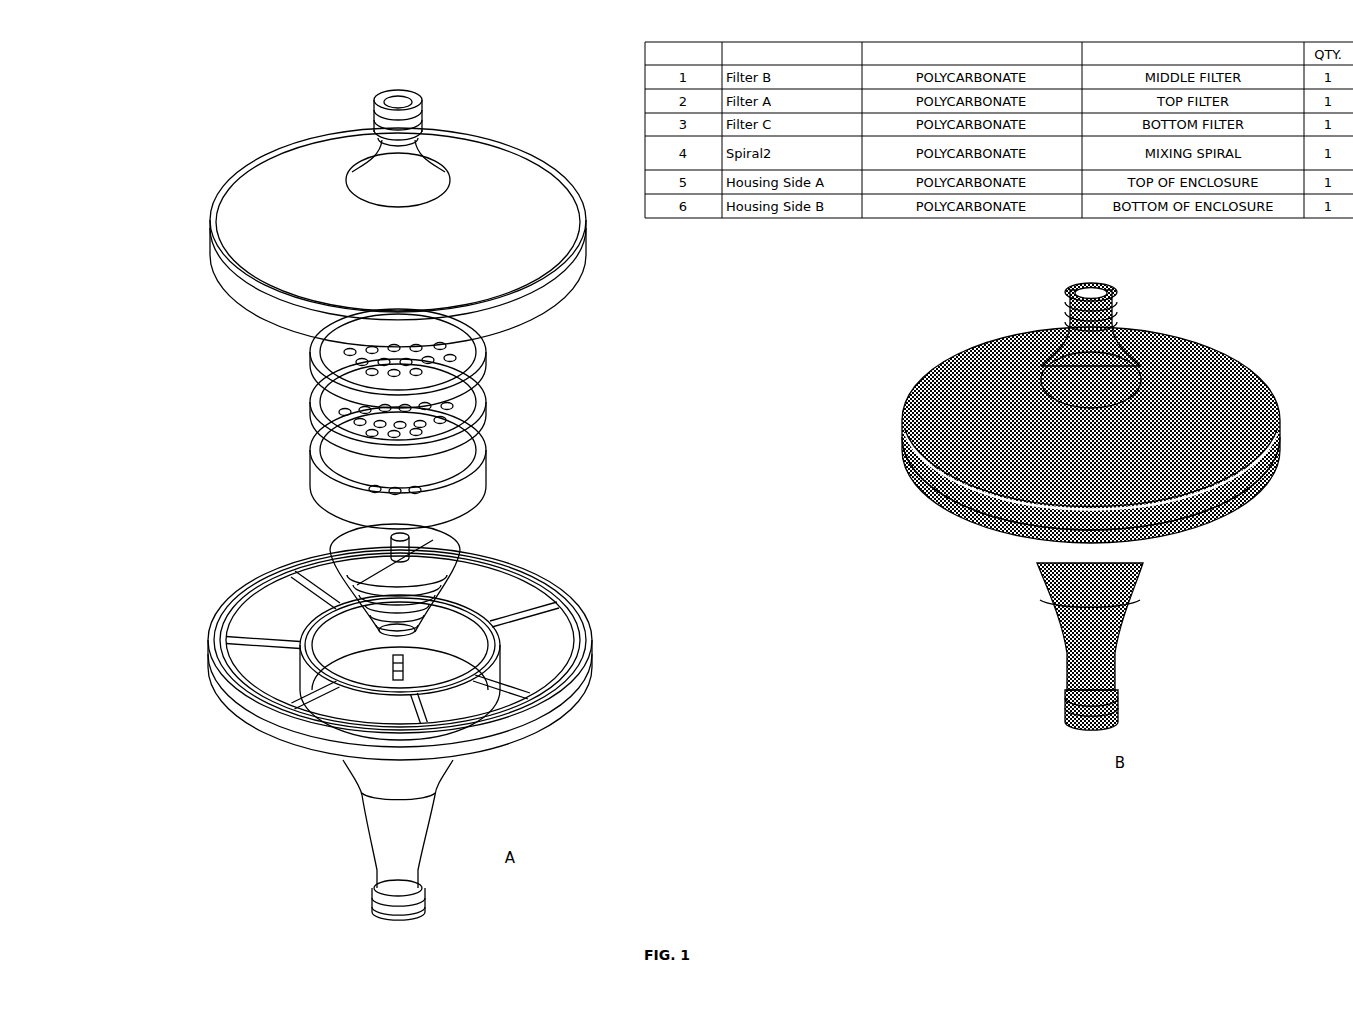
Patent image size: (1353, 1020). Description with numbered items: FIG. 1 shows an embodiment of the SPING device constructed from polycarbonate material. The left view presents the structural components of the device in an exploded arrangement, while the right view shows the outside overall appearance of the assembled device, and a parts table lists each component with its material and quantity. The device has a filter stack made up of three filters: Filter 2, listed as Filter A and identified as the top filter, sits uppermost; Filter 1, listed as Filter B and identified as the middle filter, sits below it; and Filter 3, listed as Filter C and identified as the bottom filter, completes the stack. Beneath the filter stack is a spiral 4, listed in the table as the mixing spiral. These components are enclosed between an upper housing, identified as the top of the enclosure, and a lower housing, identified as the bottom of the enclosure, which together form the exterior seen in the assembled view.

The Filter B 1 is at (480, 432).
The Filter A 2 is at (310, 361).
The Filter C 3 is at (447, 510).
The spiral 4 is at (440, 566).